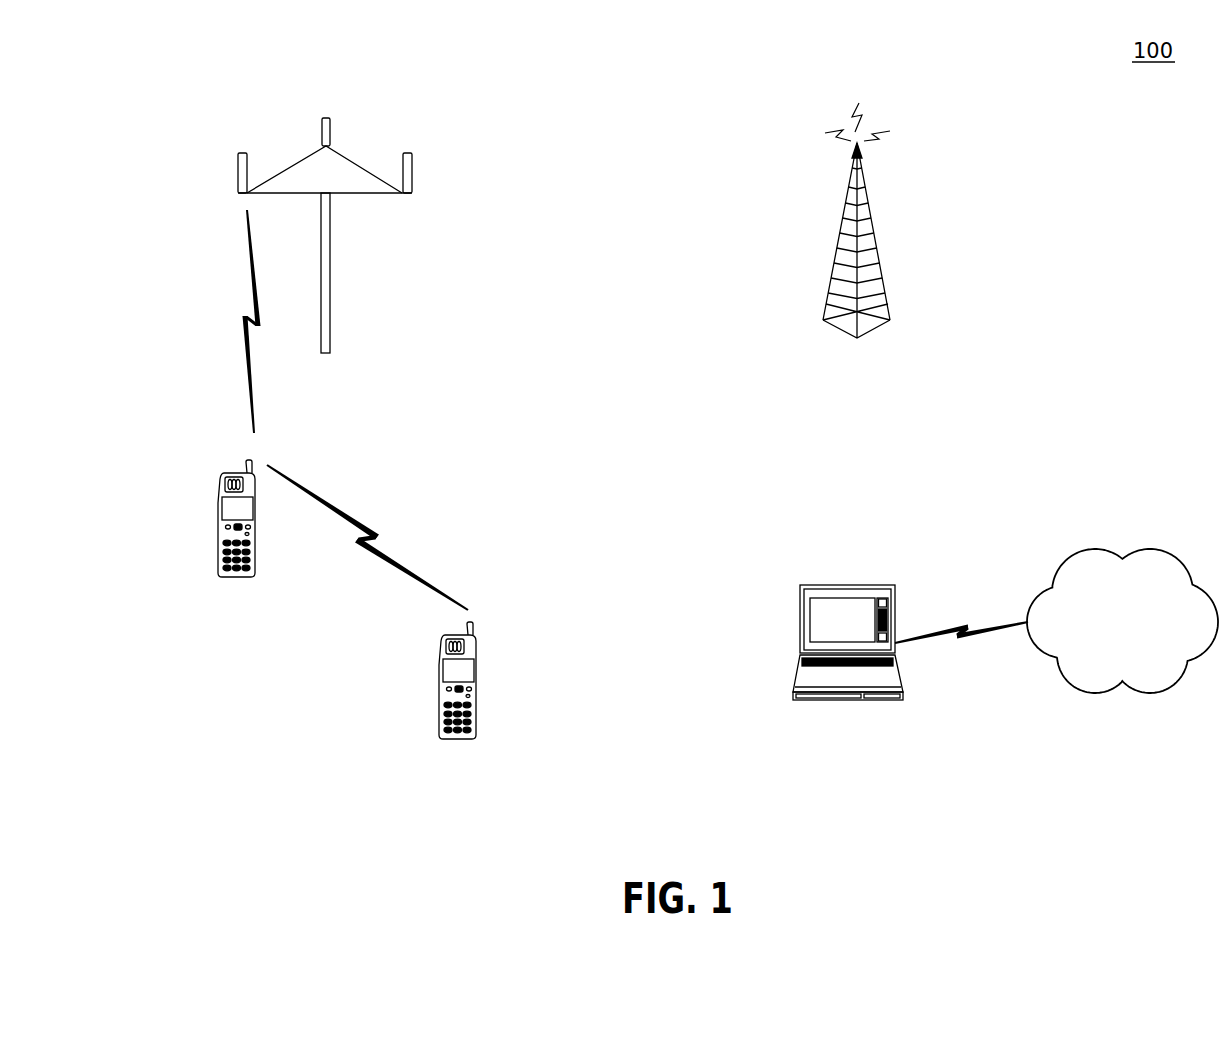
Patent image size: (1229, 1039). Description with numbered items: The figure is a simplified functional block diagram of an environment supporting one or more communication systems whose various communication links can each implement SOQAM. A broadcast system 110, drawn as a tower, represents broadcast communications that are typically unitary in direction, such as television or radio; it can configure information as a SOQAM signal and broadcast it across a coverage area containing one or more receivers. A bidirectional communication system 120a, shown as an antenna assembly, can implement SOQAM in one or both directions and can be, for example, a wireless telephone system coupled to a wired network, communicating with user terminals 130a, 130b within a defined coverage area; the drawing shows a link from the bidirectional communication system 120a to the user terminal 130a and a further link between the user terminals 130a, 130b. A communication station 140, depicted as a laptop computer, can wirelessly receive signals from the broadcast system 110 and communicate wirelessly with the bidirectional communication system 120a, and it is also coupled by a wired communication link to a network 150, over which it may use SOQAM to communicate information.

The broadcast system 110 is at (902, 303).
The bidirectional communication system 120a is at (373, 312).
The user terminal 130a is at (208, 517).
The user terminal 130b is at (427, 678).
The communication station 140 is at (900, 590).
The network 150 is at (1173, 548).